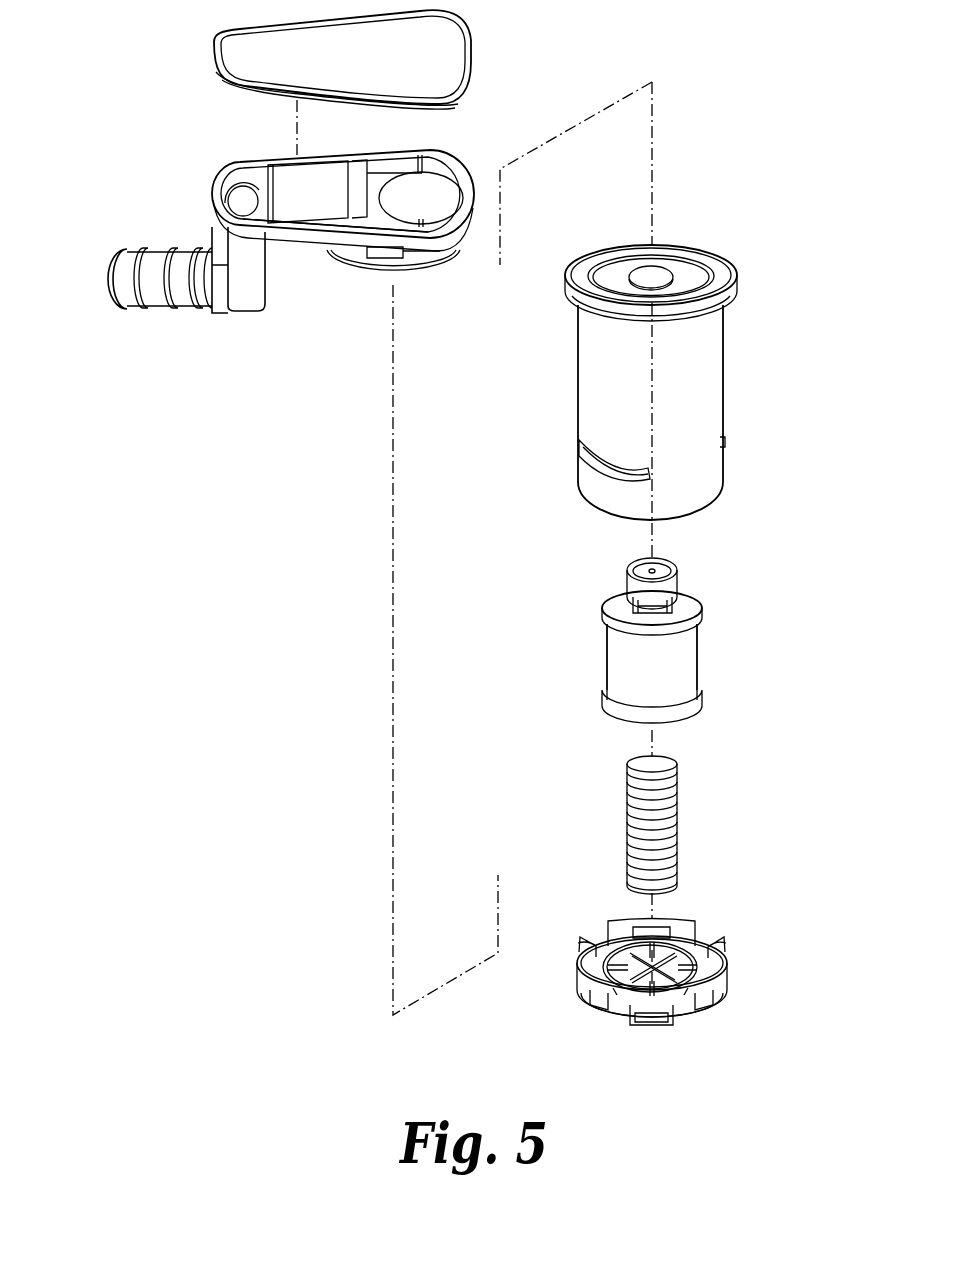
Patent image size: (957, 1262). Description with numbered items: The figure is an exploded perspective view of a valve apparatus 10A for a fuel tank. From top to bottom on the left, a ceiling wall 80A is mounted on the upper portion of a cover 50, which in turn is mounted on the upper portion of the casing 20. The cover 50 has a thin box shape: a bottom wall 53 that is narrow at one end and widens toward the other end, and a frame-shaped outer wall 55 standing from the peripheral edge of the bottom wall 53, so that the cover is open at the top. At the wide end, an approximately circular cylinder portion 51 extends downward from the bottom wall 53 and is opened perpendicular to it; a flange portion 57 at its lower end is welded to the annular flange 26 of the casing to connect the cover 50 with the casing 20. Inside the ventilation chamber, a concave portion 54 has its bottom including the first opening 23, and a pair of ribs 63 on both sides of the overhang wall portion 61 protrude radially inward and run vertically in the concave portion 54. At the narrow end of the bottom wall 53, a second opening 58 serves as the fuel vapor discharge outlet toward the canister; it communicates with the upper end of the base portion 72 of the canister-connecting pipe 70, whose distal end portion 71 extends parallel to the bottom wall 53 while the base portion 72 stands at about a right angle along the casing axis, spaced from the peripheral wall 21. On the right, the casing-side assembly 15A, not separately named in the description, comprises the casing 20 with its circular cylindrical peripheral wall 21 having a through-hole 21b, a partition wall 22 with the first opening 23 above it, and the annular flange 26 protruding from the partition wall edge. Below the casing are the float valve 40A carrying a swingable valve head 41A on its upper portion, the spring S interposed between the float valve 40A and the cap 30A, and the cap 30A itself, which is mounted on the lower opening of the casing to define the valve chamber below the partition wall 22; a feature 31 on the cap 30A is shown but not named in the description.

The valve apparatus 10A is at (211, 155).
The ceiling wall 80A is at (426, 32).
The cover 50 is at (354, 284).
The bottom wall 53 is at (309, 181).
The overhang wall portion 61 is at (379, 171).
The ribs 63 is at (421, 168).
The concave portion 54 is at (448, 178).
The second opening 58 is at (246, 198).
The outer wall 55 is at (303, 228).
The flange portion 57 is at (435, 254).
The cylinder portion 51 is at (394, 258).
The canister-connecting pipe 70 is at (293, 347).
The distal end portion 71 is at (217, 288).
The base portion 72 is at (252, 298).
The container assembly 15A is at (711, 229).
The casing 20 is at (737, 377).
The peripheral wall 21 is at (593, 397).
The through-hole 21b is at (623, 482).
The partition wall 22 is at (695, 268).
The first opening 23 is at (664, 270).
The annular flange 26 is at (604, 323).
The float valve 40A is at (683, 653).
The valve head 41A is at (665, 568).
The spring S is at (683, 817).
The cap 30A is at (718, 950).
The cross rib 31 is at (628, 997).